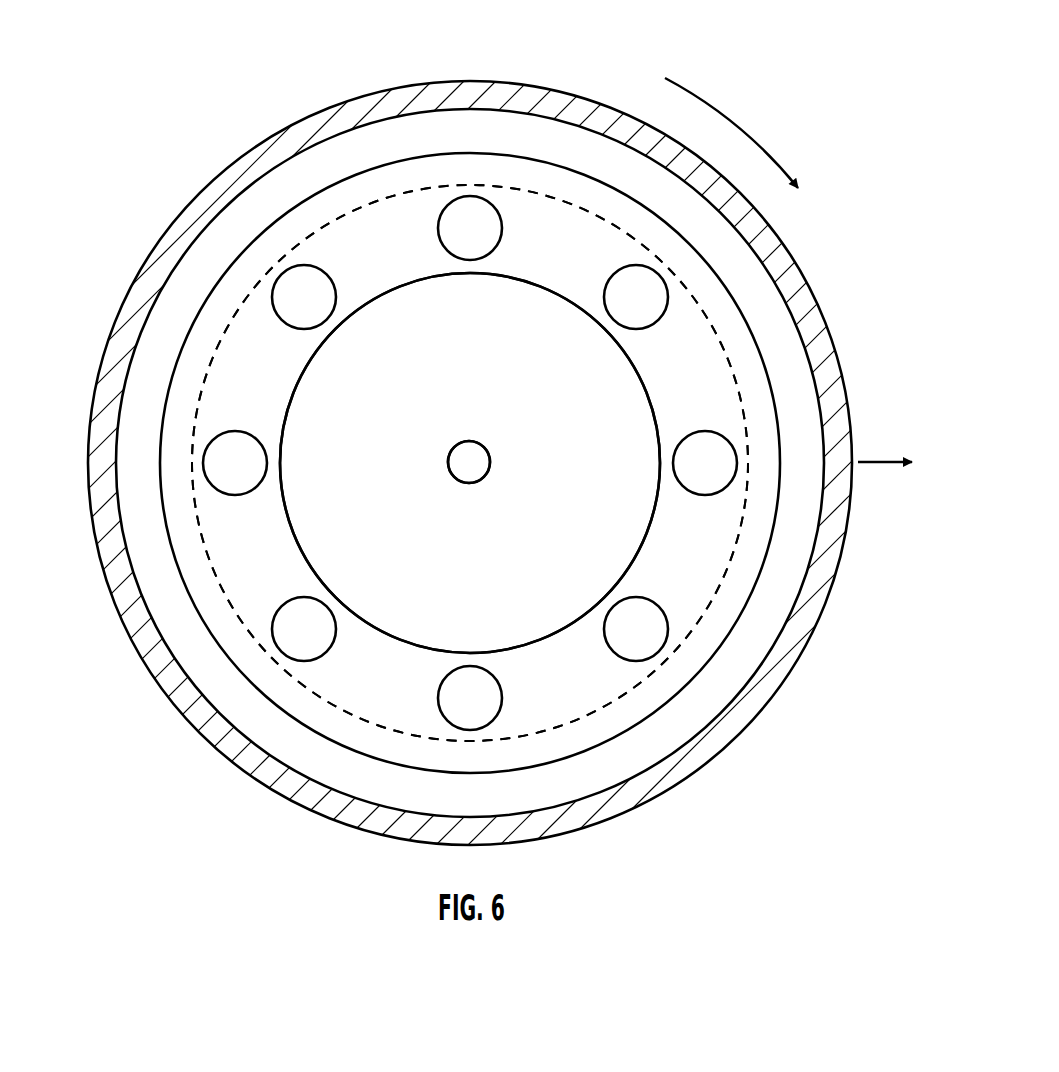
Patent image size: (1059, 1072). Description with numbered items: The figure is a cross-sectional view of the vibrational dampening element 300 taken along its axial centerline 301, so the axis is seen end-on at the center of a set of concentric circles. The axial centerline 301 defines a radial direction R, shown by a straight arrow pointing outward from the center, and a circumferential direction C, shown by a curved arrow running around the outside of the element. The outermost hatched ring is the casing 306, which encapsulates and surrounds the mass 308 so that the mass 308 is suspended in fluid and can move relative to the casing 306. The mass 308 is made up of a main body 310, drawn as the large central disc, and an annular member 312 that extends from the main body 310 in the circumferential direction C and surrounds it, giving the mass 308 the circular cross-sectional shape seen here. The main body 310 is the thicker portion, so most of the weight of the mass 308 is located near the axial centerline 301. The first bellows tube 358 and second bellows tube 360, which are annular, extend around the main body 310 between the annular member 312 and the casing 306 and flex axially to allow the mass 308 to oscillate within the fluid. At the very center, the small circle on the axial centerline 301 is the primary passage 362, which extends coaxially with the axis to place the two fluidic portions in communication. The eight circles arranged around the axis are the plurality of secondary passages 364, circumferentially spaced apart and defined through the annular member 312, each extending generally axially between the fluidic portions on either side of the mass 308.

The vibrational dampening element 300 is at (66, 158).
The axial centerline 301 is at (450, 480).
The casing 306 is at (118, 407).
The mass 308 is at (535, 602).
The main body 310 is at (590, 423).
The annular member 312 is at (682, 590).
The first bellows tube 358 is at (363, 202).
The second bellows tube 360 is at (470, 388).
The primary passage 362 is at (472, 468).
The secondary passages 364 is at (637, 263).
The circumferential direction C is at (748, 132).
The radial direction R is at (888, 462).